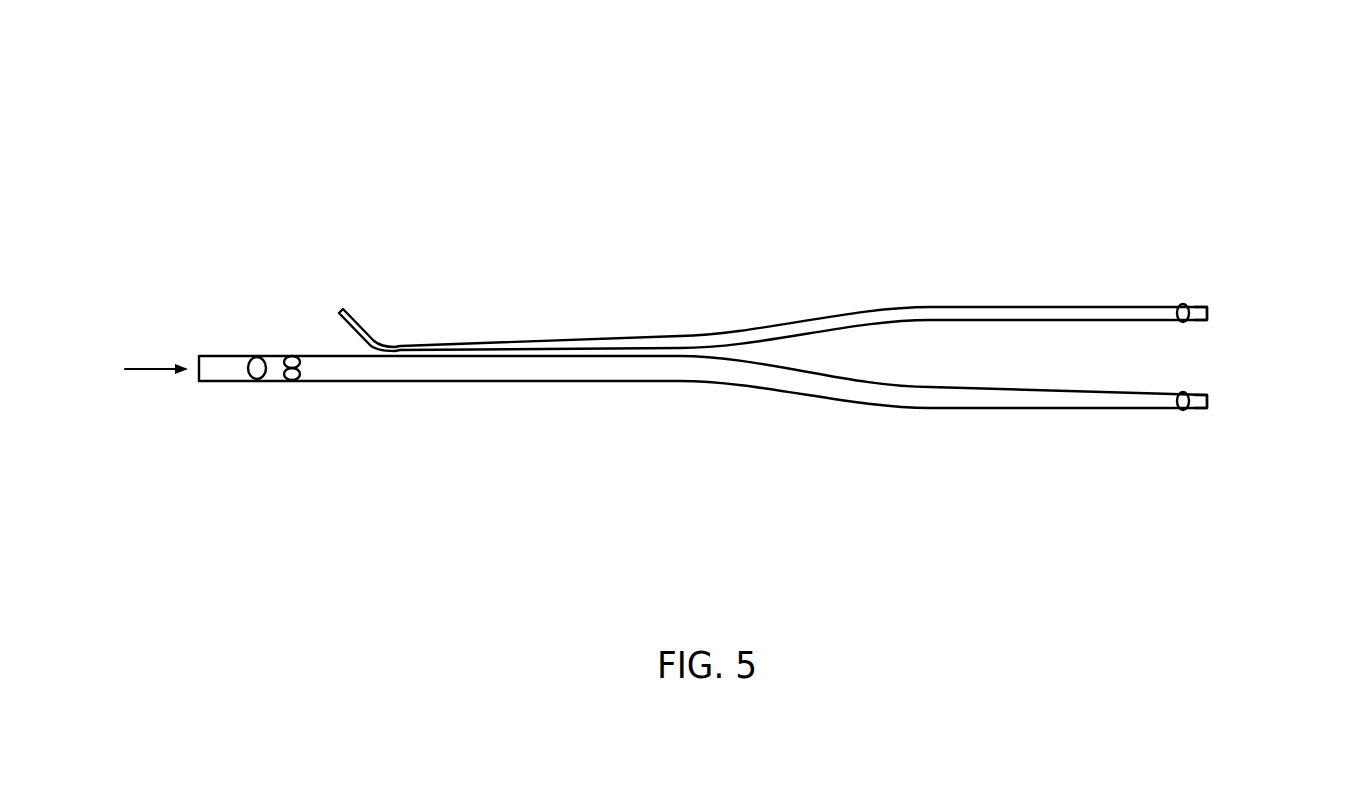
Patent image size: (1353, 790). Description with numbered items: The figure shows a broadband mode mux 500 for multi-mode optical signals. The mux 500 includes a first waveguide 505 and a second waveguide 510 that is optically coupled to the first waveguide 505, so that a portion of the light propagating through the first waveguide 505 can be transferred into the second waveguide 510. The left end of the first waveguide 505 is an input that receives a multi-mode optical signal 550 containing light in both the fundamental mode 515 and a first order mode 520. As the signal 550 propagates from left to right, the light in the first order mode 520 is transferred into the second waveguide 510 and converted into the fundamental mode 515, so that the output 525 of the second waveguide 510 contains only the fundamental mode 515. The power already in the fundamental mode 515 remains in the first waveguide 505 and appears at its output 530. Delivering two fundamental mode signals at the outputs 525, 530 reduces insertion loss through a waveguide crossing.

The mux 500 is at (243, 117).
The first waveguide 505 is at (553, 382).
The second waveguide 510 is at (731, 334).
The fundamental mode 515 is at (257, 390).
The first order mode 520 is at (292, 390).
The output 525 is at (1226, 334).
The output 530 is at (1226, 418).
The multi-mode optical signal 550 is at (143, 368).